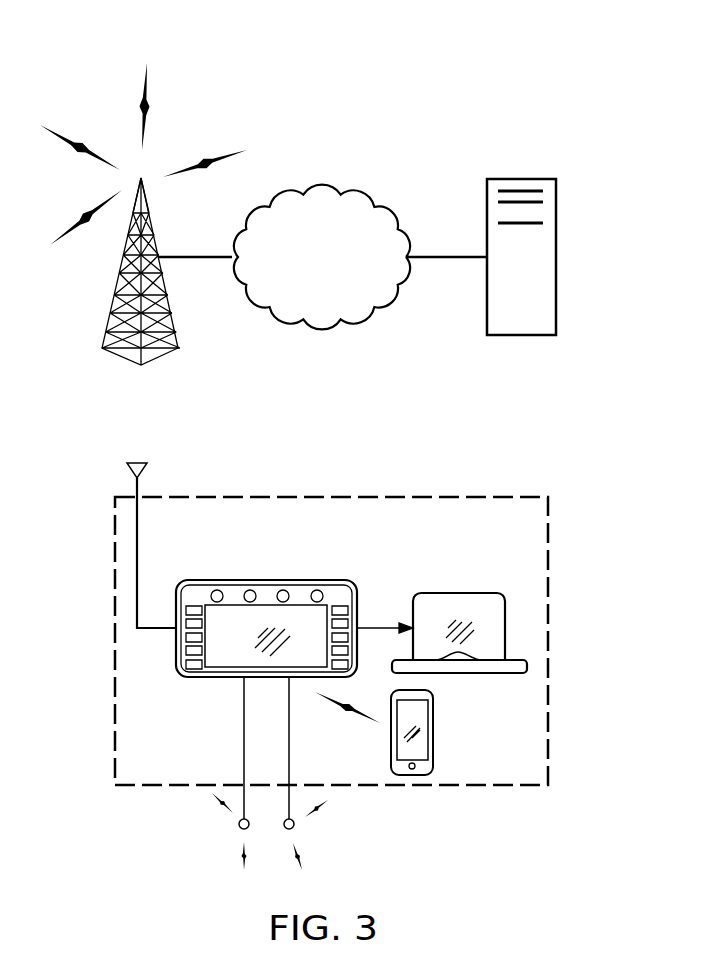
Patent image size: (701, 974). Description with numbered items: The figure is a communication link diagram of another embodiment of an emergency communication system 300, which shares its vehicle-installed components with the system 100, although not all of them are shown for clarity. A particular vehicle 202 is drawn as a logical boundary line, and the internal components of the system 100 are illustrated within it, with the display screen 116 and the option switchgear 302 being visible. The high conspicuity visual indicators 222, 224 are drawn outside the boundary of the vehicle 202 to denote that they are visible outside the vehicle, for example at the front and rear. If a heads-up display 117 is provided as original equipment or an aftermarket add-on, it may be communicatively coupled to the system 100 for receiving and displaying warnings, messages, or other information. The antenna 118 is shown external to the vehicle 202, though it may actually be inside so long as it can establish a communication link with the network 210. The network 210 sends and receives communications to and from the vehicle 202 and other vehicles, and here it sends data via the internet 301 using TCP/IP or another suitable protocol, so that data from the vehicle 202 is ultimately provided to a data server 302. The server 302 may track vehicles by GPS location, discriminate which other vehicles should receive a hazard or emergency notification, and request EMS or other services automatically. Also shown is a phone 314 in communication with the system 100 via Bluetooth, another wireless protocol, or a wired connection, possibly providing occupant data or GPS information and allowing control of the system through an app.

The emergency communication system 300 is at (464, 70).
The network 210 is at (158, 358).
The internet 301 is at (299, 273).
The data server 302 is at (556, 233).
The vehicle 202 is at (390, 488).
The antenna 118 is at (130, 458).
The system 100 is at (266, 630).
The display screen 116 is at (220, 662).
The heads-up display 117 is at (458, 592).
The phone 314 is at (433, 732).
The high conspicuity visual indicator 224 is at (239, 826).
The high conspicuity visual indicator 222 is at (294, 826).